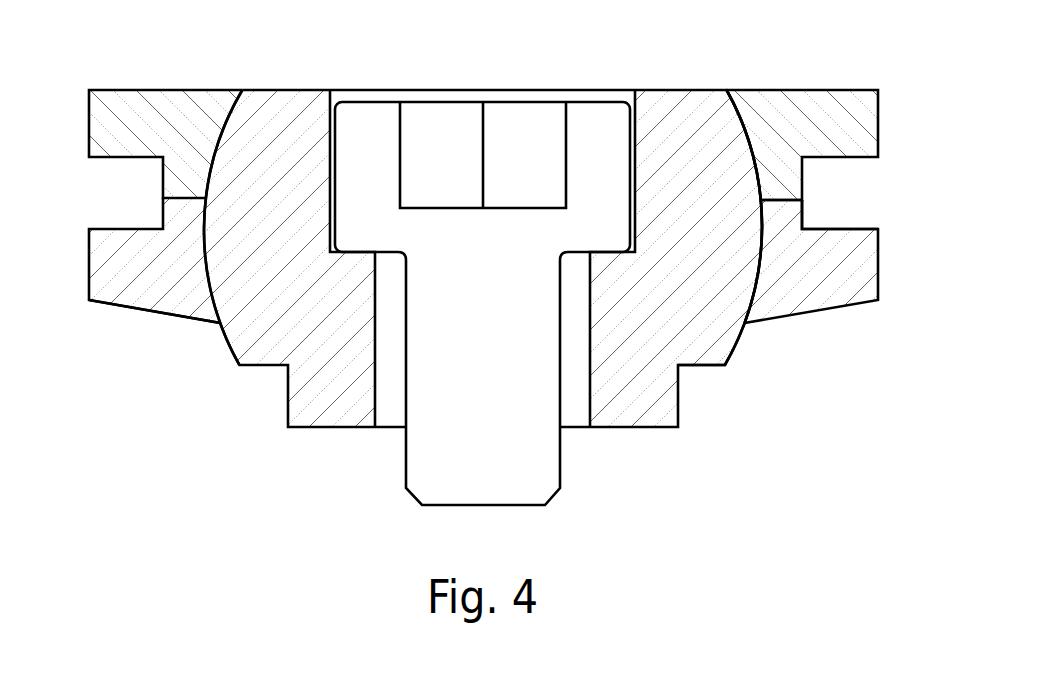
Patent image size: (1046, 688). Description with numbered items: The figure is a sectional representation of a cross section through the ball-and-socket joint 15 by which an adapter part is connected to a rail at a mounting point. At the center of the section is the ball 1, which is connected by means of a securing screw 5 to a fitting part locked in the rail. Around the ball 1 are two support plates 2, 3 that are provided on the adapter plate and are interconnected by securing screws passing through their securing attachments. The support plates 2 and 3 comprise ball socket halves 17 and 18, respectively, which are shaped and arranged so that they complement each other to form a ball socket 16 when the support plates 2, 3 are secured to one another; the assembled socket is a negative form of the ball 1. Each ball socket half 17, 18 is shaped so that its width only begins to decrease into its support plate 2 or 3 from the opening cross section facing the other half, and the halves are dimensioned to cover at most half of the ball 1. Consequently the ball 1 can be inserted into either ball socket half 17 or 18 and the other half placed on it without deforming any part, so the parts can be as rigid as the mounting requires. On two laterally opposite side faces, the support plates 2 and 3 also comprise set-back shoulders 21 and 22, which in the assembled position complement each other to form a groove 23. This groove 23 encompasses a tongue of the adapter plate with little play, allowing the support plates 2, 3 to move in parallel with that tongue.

The ball 1 is at (240, 352).
The support plate 2 is at (803, 150).
The support plate 3 is at (150, 240).
The securing screw 5 is at (525, 430).
The ball-and-socket joint 15 is at (755, 366).
The ball socket 16 is at (757, 290).
The ball socket half 17 is at (230, 137).
The ball socket half 18 is at (220, 323).
The set-back shoulder 21 is at (787, 232).
The set-back shoulder 22 is at (772, 177).
The groove 23 is at (817, 217).